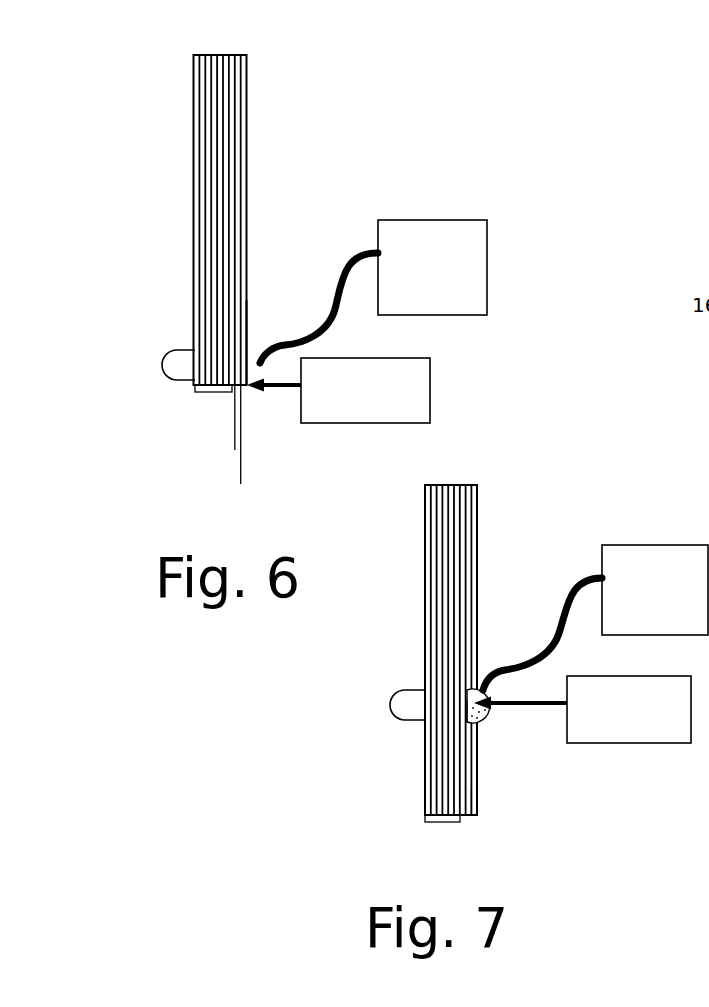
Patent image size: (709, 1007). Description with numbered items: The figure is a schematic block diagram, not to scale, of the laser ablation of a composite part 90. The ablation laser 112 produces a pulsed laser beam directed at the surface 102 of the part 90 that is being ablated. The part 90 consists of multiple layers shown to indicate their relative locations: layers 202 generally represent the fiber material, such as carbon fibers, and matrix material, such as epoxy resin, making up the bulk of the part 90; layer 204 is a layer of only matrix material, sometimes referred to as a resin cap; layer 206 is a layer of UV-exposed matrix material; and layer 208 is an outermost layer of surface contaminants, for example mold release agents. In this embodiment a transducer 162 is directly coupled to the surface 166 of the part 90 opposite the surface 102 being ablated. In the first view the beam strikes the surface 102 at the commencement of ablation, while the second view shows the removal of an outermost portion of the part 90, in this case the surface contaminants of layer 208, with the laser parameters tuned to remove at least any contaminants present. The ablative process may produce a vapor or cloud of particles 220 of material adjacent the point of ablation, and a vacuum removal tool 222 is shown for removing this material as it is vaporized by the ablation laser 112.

In FIG. 6, the part 90 is at (246, 122).
In FIG. 7, the part 90 is at (475, 528).
In FIG. 6, the surface 102 is at (252, 220).
In FIG. 7, the surface 102 is at (487, 643).
In FIG. 6, the ablation laser 112 is at (338, 390).
In FIG. 7, the ablation laser 112 is at (582, 709).
In FIG. 6, the transducer 162 is at (119, 396).
In FIG. 7, the transducer 162 is at (349, 736).
In FIG. 6, the surface 166 is at (212, 220).
In FIG. 7, the surface 166 is at (440, 643).
In FIG. 6, the layers 202 is at (213, 392).
In FIG. 7, the layers 202 is at (442, 822).
In FIG. 6, the layer 204 is at (235, 450).
In FIG. 7, the layer 204 is at (492, 823).
In FIG. 6, the layer 206 is at (241, 484).
In FIG. 7, the layer 206 is at (496, 741).
In FIG. 6, the layer 208 is at (285, 385).
In FIG. 7, the layer 208 is at (509, 625).
In FIG. 7, the particles 220 is at (505, 717).
In FIG. 6, the vacuum removal tool 222 is at (373, 291).
In FIG. 7, the vacuum removal tool 222 is at (595, 617).